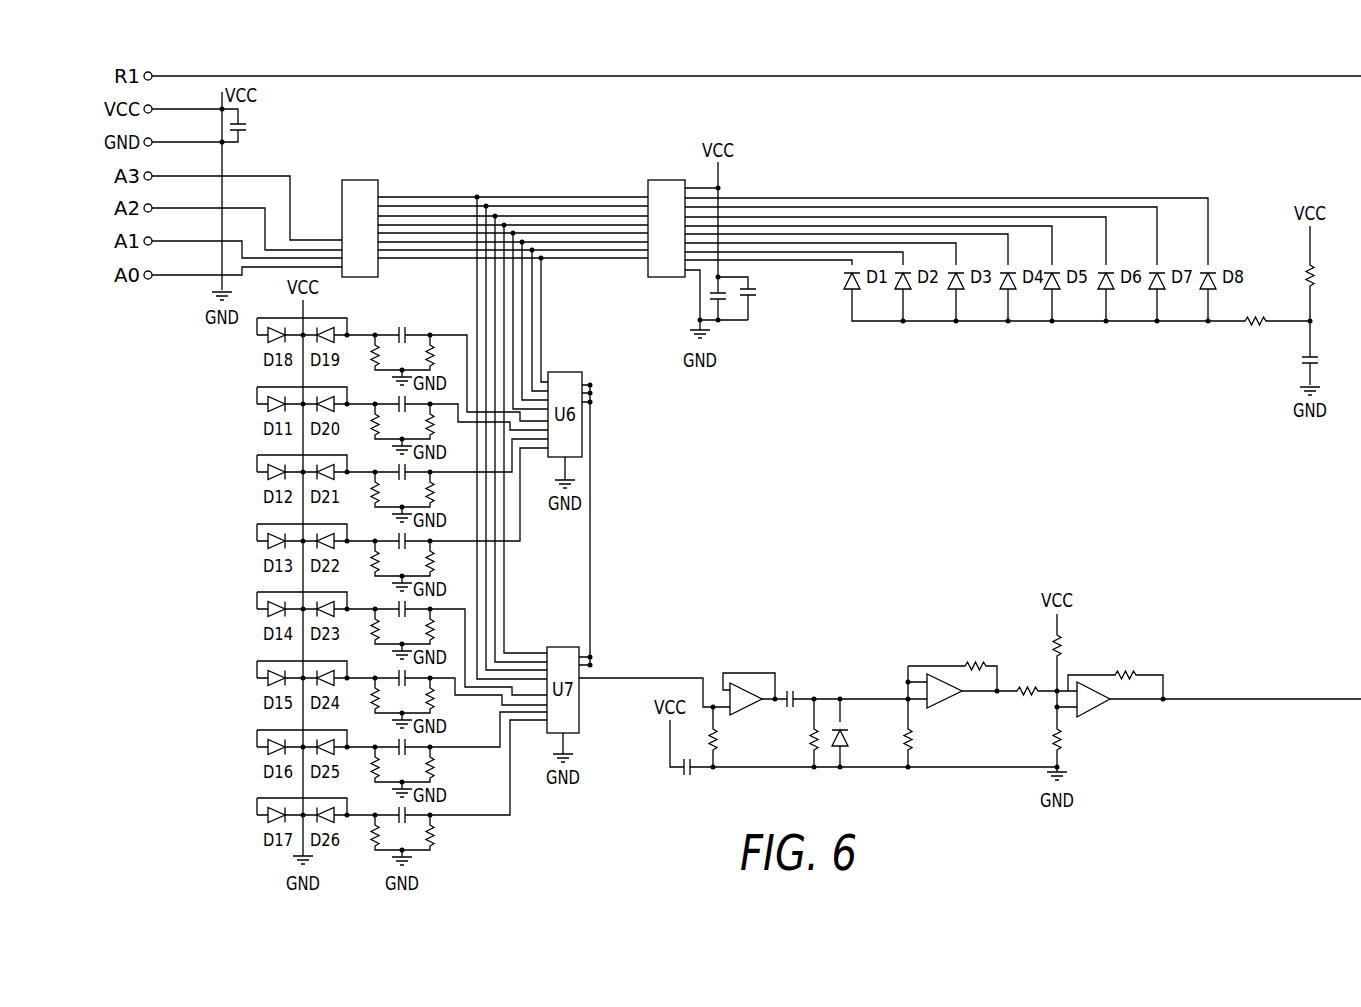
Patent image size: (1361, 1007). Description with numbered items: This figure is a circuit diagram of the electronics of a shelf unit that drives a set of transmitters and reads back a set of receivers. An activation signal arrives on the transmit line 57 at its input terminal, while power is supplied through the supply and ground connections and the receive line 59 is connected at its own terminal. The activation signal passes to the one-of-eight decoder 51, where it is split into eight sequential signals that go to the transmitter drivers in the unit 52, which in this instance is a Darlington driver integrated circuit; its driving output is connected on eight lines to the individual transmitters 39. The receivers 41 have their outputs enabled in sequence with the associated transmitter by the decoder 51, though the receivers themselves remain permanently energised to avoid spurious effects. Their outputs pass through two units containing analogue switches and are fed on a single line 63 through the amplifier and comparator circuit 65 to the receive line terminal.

The receive line 59 is at (168, 76).
The transmit line 57 is at (176, 243).
The 1 of 8 decoder 51 is at (361, 191).
The unit 52 is at (668, 190).
The transmitters 39 is at (957, 291).
The receivers 41 is at (262, 393).
The single line 63 is at (660, 678).
The amplifier and comparator circuit 65 is at (952, 650).